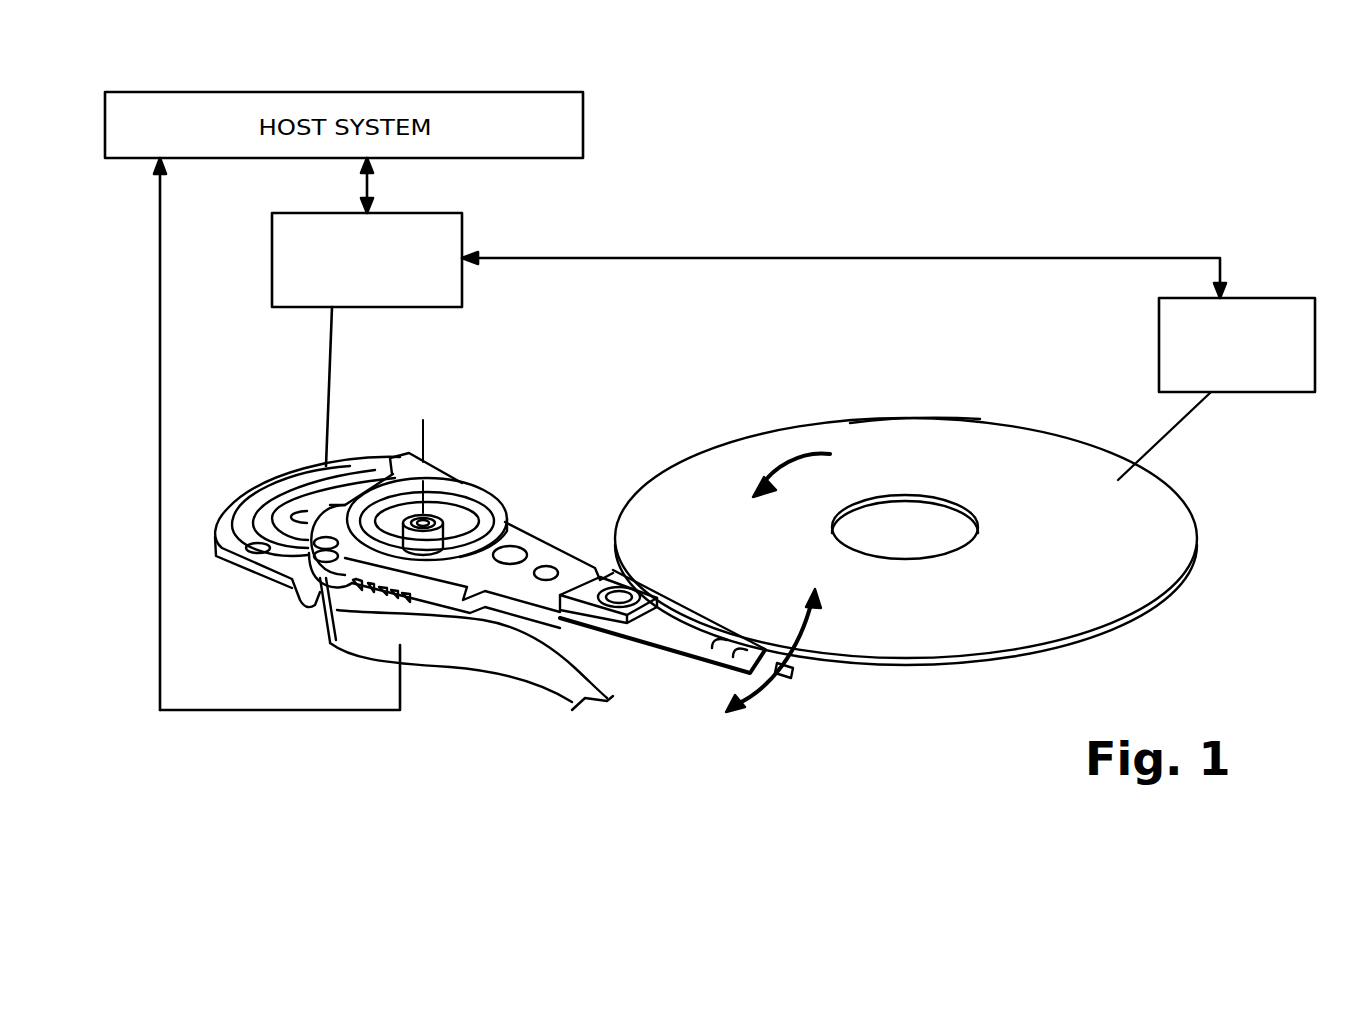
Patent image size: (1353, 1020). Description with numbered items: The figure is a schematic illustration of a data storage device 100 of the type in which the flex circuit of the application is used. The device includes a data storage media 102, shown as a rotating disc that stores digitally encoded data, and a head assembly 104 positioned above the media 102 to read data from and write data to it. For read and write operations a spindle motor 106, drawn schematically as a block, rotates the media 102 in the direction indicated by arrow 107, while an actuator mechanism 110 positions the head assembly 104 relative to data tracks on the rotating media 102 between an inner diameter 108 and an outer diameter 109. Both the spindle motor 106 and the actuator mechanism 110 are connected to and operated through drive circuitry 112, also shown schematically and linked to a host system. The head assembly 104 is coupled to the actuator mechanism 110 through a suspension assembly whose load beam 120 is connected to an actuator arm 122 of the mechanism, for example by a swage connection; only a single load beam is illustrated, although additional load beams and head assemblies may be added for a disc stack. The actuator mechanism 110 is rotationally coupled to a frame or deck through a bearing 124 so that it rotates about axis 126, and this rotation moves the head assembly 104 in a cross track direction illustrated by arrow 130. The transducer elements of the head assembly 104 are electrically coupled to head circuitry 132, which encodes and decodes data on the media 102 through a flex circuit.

The data storage device 100 is at (1094, 198).
The data storage media 102 is at (906, 503).
The head assembly 104 is at (792, 672).
The spindle motor 106 is at (1280, 298).
The arrow 107 is at (812, 462).
The inner diameter 108 is at (945, 495).
The outer diameter 109 is at (912, 418).
The actuator mechanism 110 is at (556, 546).
The drive circuitry 112 is at (462, 225).
The load beam 120 is at (658, 623).
The actuator arm 122 is at (555, 553).
The bearing 124 is at (420, 515).
The axis 126 is at (422, 447).
The arrow 130 is at (805, 633).
The head circuitry 132 is at (388, 648).